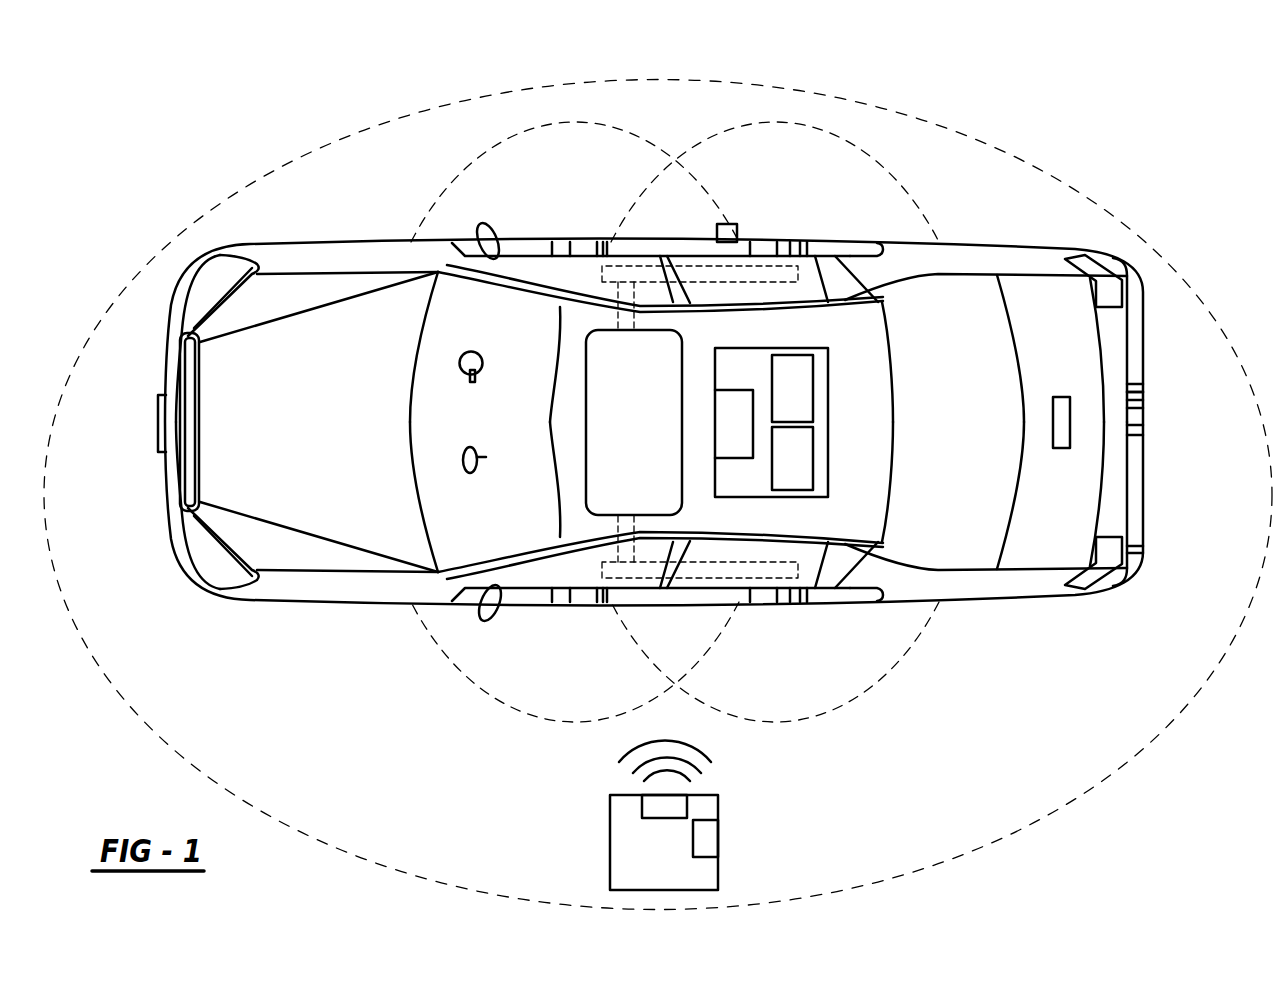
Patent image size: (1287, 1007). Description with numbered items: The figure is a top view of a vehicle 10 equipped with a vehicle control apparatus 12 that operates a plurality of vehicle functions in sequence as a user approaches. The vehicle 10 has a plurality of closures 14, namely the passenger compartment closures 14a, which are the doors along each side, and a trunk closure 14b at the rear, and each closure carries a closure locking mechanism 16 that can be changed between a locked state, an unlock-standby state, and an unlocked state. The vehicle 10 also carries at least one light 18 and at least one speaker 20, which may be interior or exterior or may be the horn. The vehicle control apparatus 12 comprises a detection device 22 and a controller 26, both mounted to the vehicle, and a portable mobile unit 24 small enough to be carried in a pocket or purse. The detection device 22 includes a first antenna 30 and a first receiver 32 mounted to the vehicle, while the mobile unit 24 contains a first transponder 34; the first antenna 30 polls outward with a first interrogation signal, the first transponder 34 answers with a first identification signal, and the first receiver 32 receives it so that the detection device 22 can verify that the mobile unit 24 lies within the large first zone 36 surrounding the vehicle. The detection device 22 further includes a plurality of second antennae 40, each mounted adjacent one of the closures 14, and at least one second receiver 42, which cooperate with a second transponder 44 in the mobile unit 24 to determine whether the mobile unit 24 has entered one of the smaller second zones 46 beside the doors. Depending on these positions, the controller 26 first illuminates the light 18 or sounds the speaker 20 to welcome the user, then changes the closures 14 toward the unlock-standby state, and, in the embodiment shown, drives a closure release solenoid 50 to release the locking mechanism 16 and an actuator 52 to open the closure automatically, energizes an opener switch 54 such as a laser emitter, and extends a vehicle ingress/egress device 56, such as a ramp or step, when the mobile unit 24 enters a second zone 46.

The vehicle 10 is at (1000, 746).
The vehicle control apparatus 12 is at (563, 421).
The closures 14 is at (525, 112).
The passenger compartment closures 14a is at (530, 240).
The trunk closure 14b is at (1136, 375).
The closure locking mechanism 16 is at (600, 242).
The light 18 is at (464, 370).
The speaker 20 is at (462, 460).
The detection device 22 is at (830, 373).
The mobile unit 24 is at (643, 847).
The controller 26 is at (620, 360).
The first antenna 30 is at (802, 390).
The first receiver 32 is at (797, 455).
The first transponder 34 is at (667, 803).
The first zone 36 is at (1025, 160).
The second antennae 40 is at (562, 245).
The second receiver 42 is at (737, 423).
The second transponder 44 is at (708, 840).
The second zones 46 is at (473, 157).
The closure release solenoid 50 is at (1136, 428).
The actuator 52 is at (1062, 448).
The opener switch 54 is at (1140, 550).
The vehicle ingress/egress device 56 is at (716, 233).